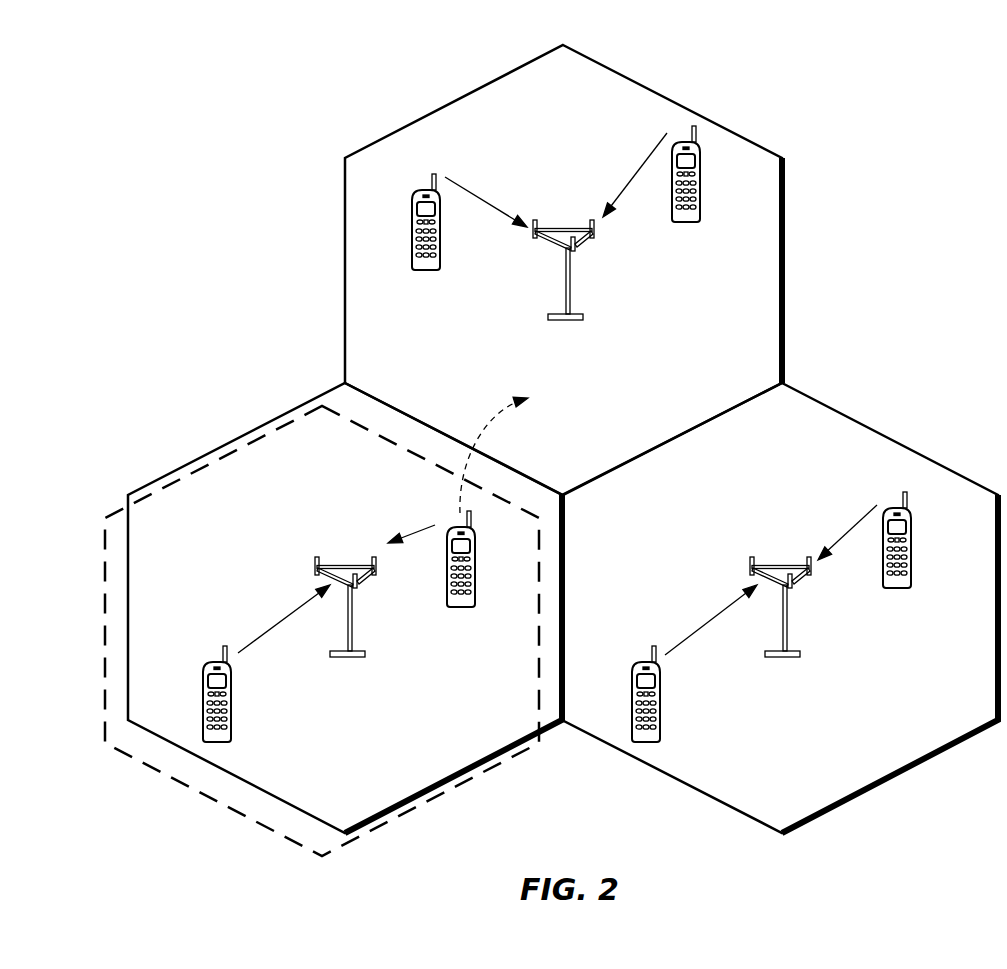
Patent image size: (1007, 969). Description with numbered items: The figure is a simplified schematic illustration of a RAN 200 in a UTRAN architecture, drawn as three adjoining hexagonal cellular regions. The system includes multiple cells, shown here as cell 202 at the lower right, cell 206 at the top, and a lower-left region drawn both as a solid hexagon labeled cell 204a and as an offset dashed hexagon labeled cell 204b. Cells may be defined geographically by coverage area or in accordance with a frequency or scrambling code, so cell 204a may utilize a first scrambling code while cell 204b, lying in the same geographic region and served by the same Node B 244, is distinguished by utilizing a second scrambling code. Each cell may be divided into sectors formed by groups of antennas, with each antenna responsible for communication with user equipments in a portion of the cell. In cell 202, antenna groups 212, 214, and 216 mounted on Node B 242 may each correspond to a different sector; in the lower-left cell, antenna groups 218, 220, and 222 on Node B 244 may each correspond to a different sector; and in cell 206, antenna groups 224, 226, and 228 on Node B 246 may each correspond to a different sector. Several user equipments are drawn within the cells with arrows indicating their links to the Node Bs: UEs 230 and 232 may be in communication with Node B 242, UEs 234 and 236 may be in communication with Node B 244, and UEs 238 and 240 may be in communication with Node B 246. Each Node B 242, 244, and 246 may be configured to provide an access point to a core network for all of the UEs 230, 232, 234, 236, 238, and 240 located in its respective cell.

The RAN 200 is at (905, 78).
The cell 202 is at (889, 438).
The cell 204a is at (212, 450).
The cell 204b is at (101, 538).
The cell 206 is at (654, 91).
The antenna group 212 is at (750, 560).
The antenna group 214 is at (792, 590).
The antenna group 216 is at (812, 574).
The antenna group 218 is at (357, 591).
The antenna group 220 is at (376, 574).
The antenna group 222 is at (315, 560).
The antenna group 224 is at (533, 237).
The antenna group 226 is at (574, 253).
The antenna group 228 is at (596, 238).
The UE 230 is at (915, 531).
The UE 232 is at (632, 690).
The UE 234 is at (476, 550).
The UE 236 is at (204, 690).
The UE 238 is at (425, 271).
The UE 240 is at (689, 222).
The Node B 242 is at (779, 586).
The Node B 244 is at (344, 585).
The Node B 246 is at (561, 249).